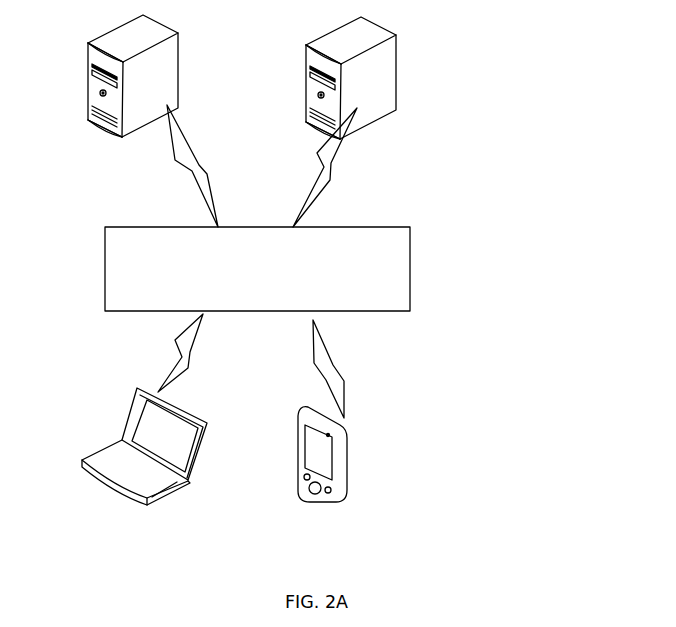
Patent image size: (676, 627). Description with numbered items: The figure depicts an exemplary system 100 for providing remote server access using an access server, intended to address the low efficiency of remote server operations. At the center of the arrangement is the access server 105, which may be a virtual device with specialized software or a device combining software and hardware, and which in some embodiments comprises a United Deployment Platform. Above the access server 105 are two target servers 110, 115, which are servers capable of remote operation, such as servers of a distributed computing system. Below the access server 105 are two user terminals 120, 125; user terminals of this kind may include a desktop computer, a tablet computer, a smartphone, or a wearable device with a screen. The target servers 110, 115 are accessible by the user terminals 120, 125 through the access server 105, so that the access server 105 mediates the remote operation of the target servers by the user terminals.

The system 100 is at (517, 43).
The access server 105 is at (238, 292).
The target server 110 is at (163, 21).
The target server 115 is at (382, 22).
The user terminal 120 is at (92, 477).
The user terminal 125 is at (348, 457).